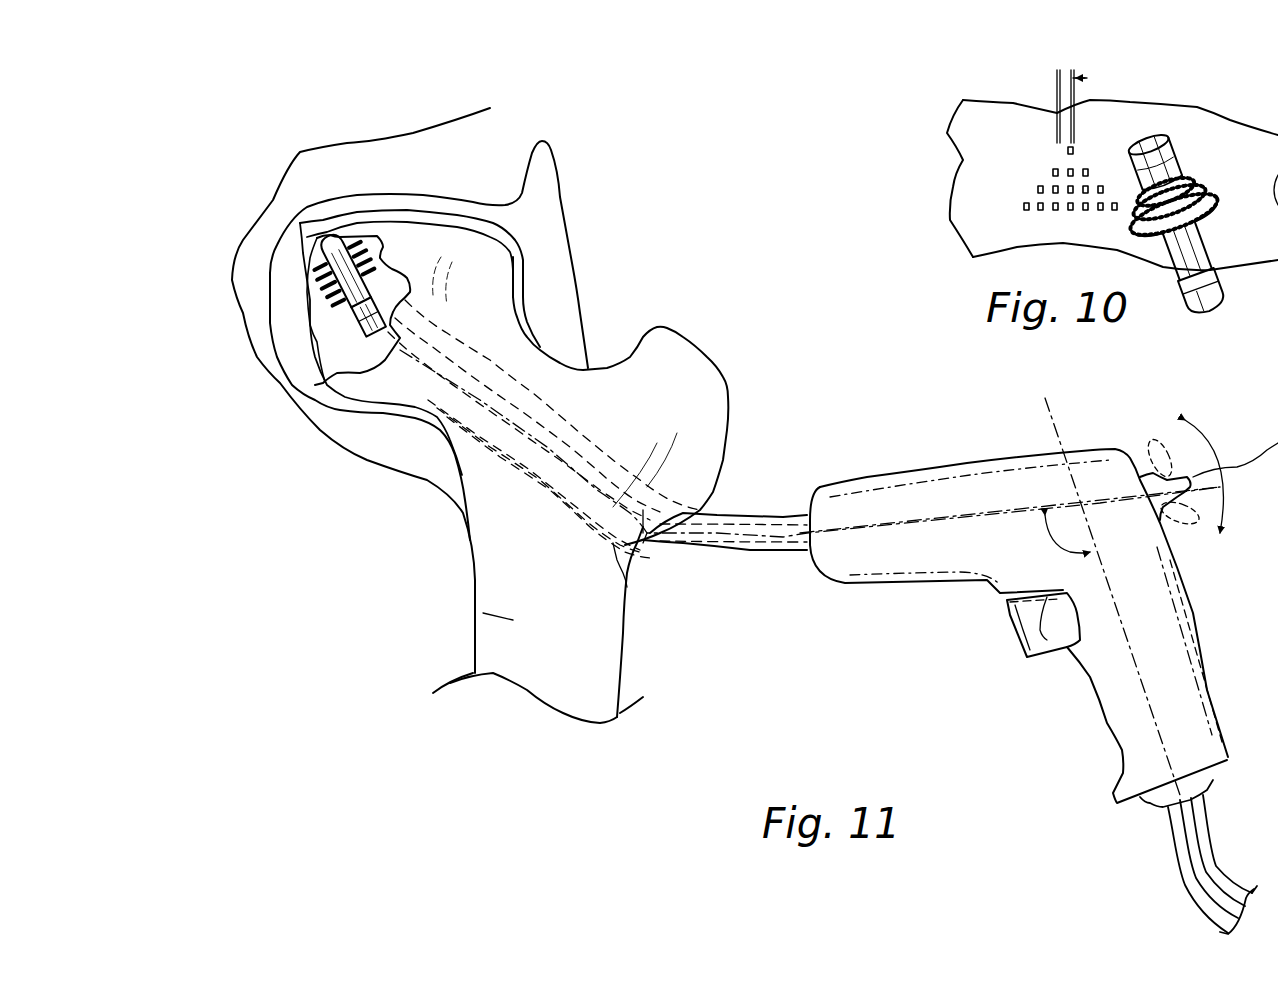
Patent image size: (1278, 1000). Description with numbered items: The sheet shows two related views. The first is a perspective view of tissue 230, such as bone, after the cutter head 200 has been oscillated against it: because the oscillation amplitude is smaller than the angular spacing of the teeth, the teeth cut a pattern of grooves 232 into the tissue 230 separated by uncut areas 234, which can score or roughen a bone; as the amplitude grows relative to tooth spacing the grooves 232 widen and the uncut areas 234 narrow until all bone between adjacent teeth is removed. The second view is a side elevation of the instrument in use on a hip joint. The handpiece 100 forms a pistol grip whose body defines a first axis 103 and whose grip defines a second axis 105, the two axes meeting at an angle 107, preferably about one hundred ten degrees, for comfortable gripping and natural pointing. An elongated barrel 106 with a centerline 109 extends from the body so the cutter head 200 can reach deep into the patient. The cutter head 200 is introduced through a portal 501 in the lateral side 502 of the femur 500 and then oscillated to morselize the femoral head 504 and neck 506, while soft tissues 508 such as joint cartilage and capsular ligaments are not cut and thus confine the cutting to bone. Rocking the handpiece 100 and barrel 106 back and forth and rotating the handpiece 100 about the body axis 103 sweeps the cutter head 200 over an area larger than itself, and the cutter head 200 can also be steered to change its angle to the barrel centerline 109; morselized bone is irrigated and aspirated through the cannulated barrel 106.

In FIG. 11, the handpiece 100 is at (947, 447).
In FIG. 11, the first axis 103 is at (907, 523).
In FIG. 11, the second axis 105 is at (1153, 707).
In FIG. 11, the barrel 106 is at (747, 513).
In FIG. 11, the angle 107 is at (1040, 567).
In FIG. 11, the centerline 109 is at (643, 533).
In FIG. 10, the cutter head 200 is at (1215, 160).
In FIG. 11, the cutter head 200 is at (323, 307).
In FIG. 10, the tissue 230 is at (1023, 166).
In FIG. 10, the grooves 232 is at (1045, 57).
In FIG. 10, the uncut areas 234 is at (1055, 78).
In FIG. 11, the femur 500 is at (483, 613).
In FIG. 11, the portal 501 is at (623, 587).
In FIG. 11, the lateral side 502 is at (623, 655).
In FIG. 11, the femoral head 504 is at (478, 263).
In FIG. 11, the neck 506 is at (540, 347).
In FIG. 11, the soft tissues 508 is at (303, 277).